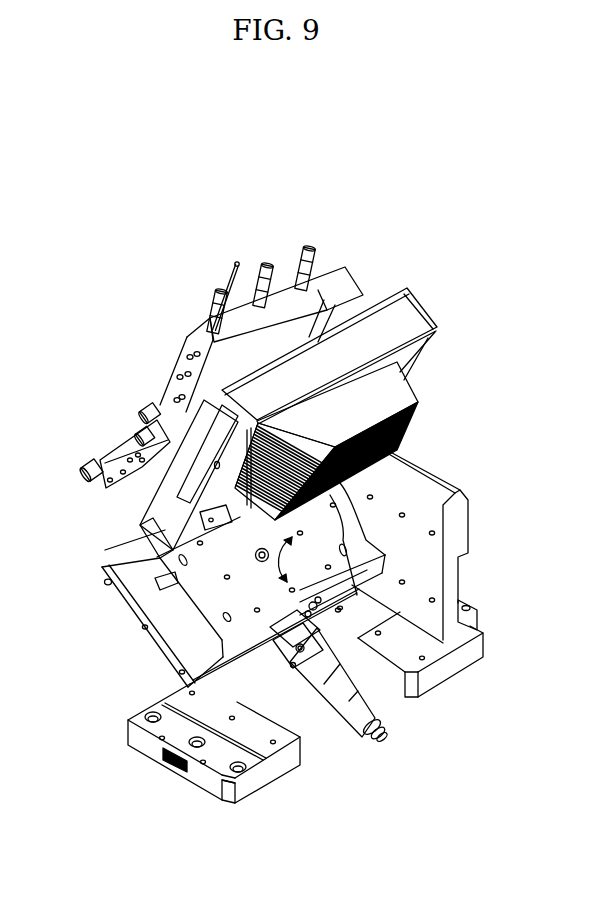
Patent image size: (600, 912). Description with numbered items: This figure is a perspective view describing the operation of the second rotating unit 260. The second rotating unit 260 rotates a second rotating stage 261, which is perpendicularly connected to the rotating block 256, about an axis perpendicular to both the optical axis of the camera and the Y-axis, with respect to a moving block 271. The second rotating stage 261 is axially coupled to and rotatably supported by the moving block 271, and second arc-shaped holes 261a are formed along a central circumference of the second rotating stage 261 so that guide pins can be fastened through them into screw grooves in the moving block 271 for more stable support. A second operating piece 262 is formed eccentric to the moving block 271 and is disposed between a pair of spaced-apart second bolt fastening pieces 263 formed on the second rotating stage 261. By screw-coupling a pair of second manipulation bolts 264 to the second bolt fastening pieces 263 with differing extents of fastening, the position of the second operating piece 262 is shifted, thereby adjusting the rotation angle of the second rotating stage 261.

The rotating block 256 is at (140, 520).
The second rotating unit 260 is at (334, 729).
The second rotating stage 261 is at (250, 620).
The second arc-shaped holes 261a is at (105, 582).
The second operating piece 262 is at (352, 630).
The second bolt fastening pieces 263 is at (350, 644).
The second manipulation bolts 264 is at (288, 636).
The moving block 271 is at (153, 601).